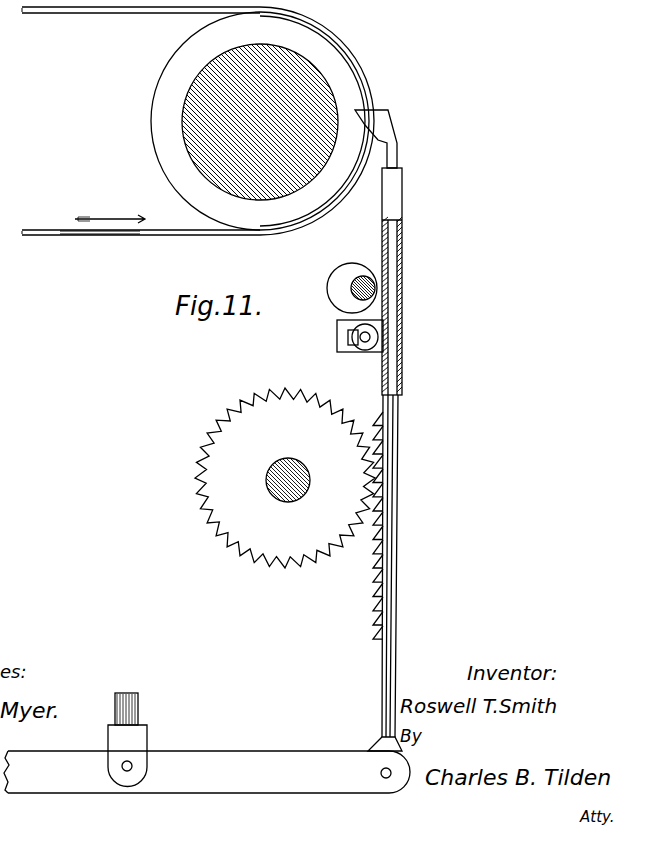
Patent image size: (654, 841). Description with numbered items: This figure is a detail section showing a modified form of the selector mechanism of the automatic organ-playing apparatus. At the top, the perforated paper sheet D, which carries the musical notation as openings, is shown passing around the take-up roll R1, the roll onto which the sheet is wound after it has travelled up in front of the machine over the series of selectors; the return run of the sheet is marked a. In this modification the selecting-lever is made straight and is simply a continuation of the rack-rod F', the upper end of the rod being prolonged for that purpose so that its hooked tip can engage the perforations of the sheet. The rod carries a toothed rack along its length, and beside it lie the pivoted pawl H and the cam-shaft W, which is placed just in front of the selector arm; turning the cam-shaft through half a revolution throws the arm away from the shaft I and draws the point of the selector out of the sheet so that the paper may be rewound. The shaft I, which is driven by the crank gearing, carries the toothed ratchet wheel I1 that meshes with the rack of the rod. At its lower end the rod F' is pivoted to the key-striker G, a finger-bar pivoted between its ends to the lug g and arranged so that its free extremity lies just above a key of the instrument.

The paper sheet D is at (70, 31).
The take-up roll R1 is at (165, 115).
The belt run a is at (100, 236).
The rack bar F' is at (394, 430).
The pawl H is at (330, 285).
The cam-shaft W is at (351, 295).
The ratchet wheel I1 is at (285, 478).
The shaft I is at (282, 477).
The key-striker G is at (207, 772).
The lug g is at (127, 740).